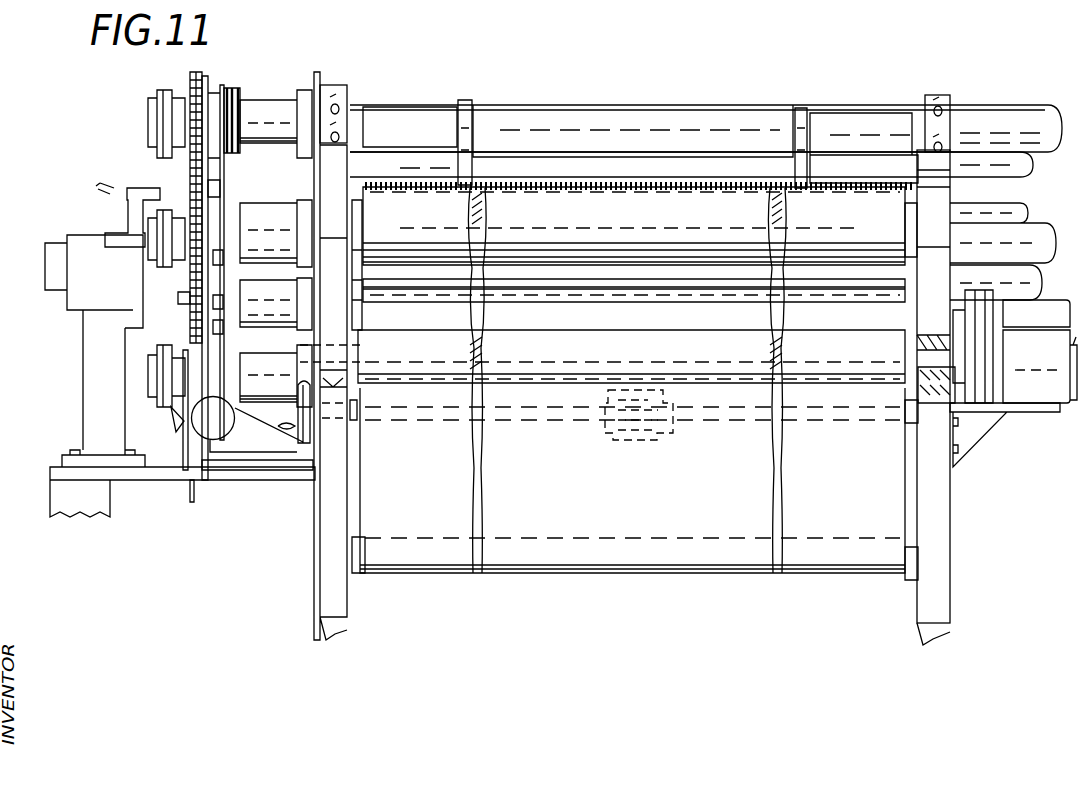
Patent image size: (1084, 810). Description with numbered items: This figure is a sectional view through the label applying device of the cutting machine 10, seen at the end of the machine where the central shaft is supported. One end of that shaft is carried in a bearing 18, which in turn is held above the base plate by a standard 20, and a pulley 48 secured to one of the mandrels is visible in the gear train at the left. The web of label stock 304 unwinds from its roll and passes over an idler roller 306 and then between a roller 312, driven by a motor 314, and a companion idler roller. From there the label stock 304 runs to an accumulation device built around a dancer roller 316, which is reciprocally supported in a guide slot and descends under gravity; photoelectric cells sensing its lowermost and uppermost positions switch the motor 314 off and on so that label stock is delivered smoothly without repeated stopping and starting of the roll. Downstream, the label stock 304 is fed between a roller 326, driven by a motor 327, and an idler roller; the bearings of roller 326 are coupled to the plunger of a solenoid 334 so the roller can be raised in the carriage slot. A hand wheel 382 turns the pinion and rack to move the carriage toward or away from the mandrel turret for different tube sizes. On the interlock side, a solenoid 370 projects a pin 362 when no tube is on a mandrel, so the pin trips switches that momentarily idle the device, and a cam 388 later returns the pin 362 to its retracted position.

The cutting machine 10 is at (663, 62).
The bearing 18 is at (83, 234).
The standard 20 is at (88, 367).
The pulley 48 is at (240, 92).
The label stock 304 is at (652, 500).
The idler roller 306 is at (620, 302).
The roller 312 is at (631, 365).
The motor 314 is at (1055, 355).
The dancer roller 316 is at (517, 544).
The roller 326 is at (704, 226).
The motor 327 is at (1055, 323).
The solenoid 334 is at (343, 108).
The pin 362 is at (182, 293).
The solenoid 370 is at (143, 187).
The hand wheel 382 is at (304, 448).
The cam 388 is at (178, 425).